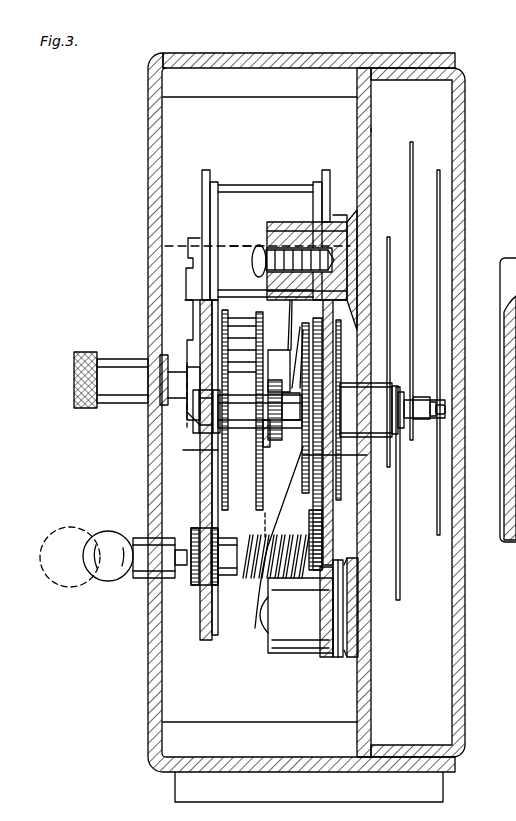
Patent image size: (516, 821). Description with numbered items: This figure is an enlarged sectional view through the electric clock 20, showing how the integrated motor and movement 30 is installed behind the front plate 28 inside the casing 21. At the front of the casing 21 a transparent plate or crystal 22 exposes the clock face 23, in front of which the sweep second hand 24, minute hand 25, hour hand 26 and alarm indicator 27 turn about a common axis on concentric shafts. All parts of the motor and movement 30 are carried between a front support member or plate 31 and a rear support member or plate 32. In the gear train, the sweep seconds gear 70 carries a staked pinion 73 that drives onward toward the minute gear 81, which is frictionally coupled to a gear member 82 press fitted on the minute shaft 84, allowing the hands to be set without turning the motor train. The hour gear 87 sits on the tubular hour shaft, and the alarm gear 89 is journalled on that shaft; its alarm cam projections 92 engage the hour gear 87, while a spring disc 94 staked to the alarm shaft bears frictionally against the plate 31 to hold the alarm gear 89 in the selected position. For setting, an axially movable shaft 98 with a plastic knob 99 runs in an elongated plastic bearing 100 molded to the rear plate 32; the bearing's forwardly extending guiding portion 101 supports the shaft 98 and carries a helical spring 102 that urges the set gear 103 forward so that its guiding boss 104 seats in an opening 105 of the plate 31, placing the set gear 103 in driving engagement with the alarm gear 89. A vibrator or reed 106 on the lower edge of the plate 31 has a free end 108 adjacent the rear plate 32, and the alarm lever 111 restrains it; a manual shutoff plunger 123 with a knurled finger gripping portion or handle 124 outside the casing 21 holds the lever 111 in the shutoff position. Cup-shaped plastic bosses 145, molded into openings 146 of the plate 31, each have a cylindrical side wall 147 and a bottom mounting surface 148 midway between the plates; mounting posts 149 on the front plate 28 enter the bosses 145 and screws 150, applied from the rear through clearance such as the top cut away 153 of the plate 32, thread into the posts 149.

The electric clock 20 is at (242, 44).
The casing 21 is at (309, 53).
The transparent plate or crystal 22 is at (460, 98).
The clock face 23 is at (372, 128).
The sweep second hand 24 is at (438, 172).
The minute hand 25 is at (411, 143).
The hour hand 26 is at (401, 586).
The alarm indicator 27 is at (389, 240).
The front plate 28 is at (356, 112).
The integrated motor and movement 30 is at (231, 163).
The front support member or plate 31 is at (338, 625).
The rear support member or plate 32 is at (204, 498).
The sweep seconds gear 70 is at (220, 463).
The pinion 73 is at (247, 447).
The minute gear 81 is at (260, 488).
The gear member 82 is at (293, 450).
The minute shaft 84 is at (418, 427).
The hour gear 87 is at (367, 455).
The alarm gear 89 is at (337, 494).
The alarm cam projections 92 is at (307, 405).
The spring disc 94 is at (325, 426).
The axially movable shaft 98 is at (183, 565).
The plastic knob 99 is at (112, 580).
The elongated plastic bearing 100 is at (230, 568).
The forwardly extending guiding portion 101 is at (260, 578).
The helical spring 102 is at (283, 503).
The set gear 103 is at (339, 498).
The guiding boss 104 is at (360, 562).
The opening 105 is at (313, 568).
The vibrator or reed 106 is at (255, 628).
The free end 108 is at (200, 299).
The alarm lever 111 is at (298, 360).
The manual shutoff plunger 123 is at (177, 370).
The finger gripping portion or handle 124 is at (112, 398).
The cup-shaped plastic bosses 145 is at (303, 320).
The openings 146 is at (340, 202).
The cylindrical side wall 147 is at (288, 222).
The bottom mounting surface 148 is at (258, 248).
The mounting posts 149 is at (303, 223).
The screws 150 is at (264, 287).
The cut away at the top 153 is at (194, 277).